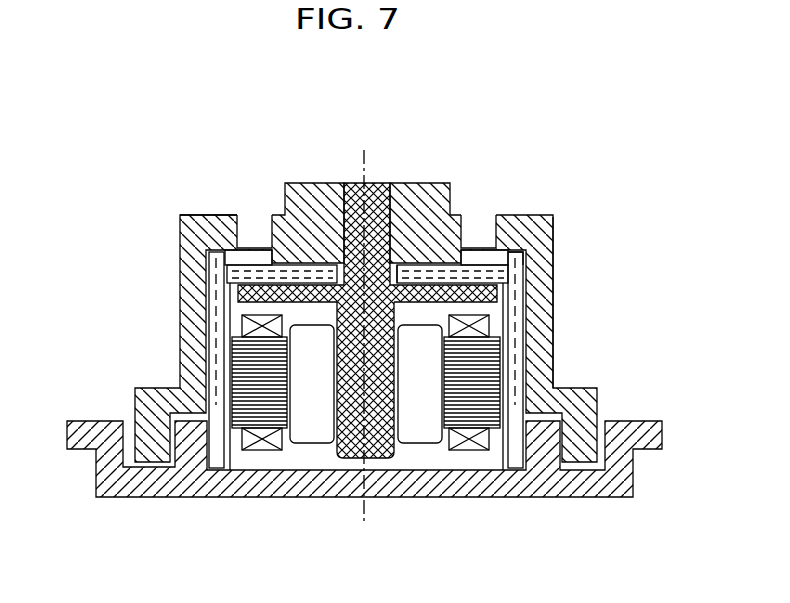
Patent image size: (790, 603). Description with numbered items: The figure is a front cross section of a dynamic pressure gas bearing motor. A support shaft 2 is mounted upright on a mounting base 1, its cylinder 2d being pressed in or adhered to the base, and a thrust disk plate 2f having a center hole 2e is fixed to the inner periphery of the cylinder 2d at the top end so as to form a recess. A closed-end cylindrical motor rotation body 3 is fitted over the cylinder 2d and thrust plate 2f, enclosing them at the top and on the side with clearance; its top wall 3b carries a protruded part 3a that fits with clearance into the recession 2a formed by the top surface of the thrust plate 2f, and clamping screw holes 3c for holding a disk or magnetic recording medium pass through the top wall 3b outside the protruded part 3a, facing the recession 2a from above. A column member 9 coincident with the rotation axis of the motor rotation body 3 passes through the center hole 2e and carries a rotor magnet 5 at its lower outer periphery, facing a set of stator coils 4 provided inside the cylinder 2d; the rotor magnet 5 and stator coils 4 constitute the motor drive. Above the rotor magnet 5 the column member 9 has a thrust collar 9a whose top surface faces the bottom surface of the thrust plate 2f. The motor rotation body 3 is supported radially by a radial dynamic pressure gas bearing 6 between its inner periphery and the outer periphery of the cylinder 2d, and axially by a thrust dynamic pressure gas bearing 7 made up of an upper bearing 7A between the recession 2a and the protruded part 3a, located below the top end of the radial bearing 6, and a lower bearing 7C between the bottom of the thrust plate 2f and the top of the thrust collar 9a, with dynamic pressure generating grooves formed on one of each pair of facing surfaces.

The mounting base 1 is at (535, 485).
The support shaft 2 is at (440, 295).
The recession 2a is at (478, 253).
The cylinder 2d is at (522, 385).
The center hole 2e is at (395, 262).
The thrust disk plate 2f is at (497, 265).
The motor rotation body 3 is at (357, 285).
The protruded part 3a is at (255, 260).
The top wall 3b is at (222, 215).
The clamping screw holes 3c is at (248, 217).
The stator coils 4 is at (258, 402).
The rotor magnet 5 is at (418, 422).
The radial dynamic pressure gas bearing 6 is at (538, 318).
The thrust dynamic pressure gas bearing 7 is at (371, 198).
The thrust dynamic pressure gas bearing 7A is at (425, 265).
The thrust dynamic pressure gas bearing 7C is at (272, 272).
The column member 9 is at (344, 423).
The thrust collar 9a is at (240, 292).